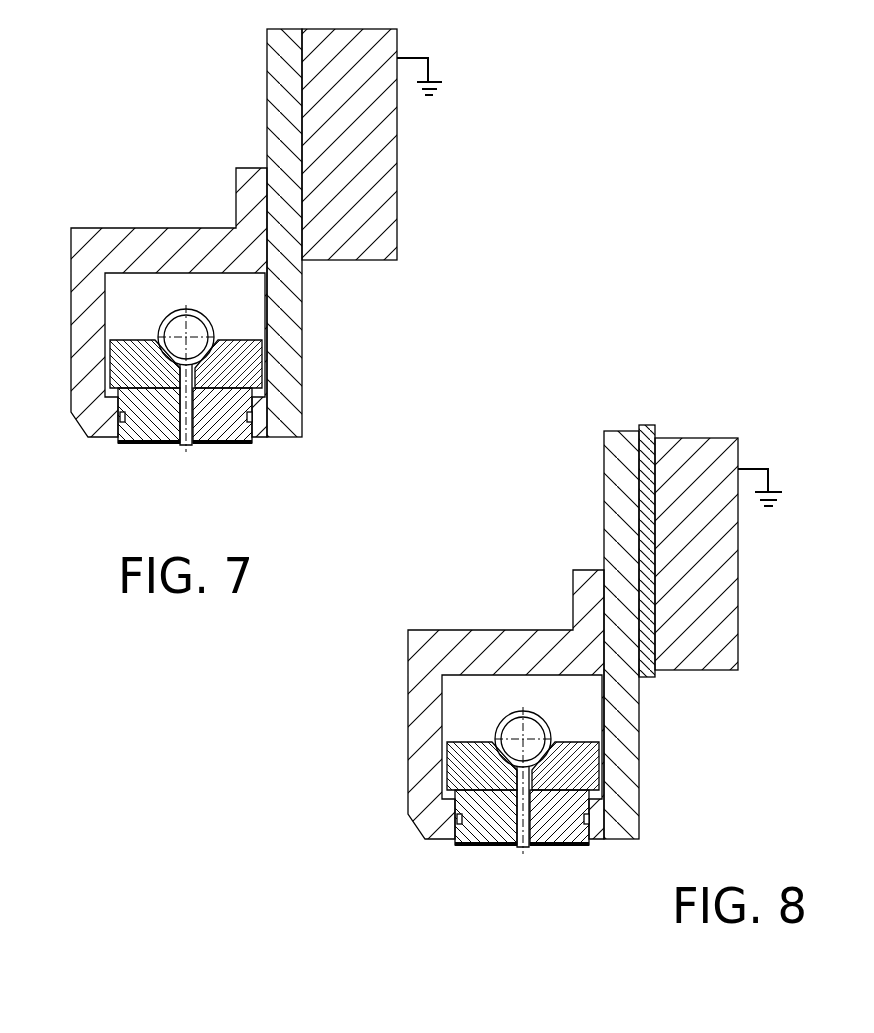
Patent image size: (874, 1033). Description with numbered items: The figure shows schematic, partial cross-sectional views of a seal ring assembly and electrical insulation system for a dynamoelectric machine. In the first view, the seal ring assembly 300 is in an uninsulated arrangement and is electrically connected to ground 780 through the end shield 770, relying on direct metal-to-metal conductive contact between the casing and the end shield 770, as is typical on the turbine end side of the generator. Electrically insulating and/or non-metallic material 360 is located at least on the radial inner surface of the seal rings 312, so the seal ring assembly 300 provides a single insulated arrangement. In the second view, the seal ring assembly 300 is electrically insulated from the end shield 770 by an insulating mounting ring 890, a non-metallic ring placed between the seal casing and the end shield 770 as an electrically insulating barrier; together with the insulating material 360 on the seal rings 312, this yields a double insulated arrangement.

In FIG. 7, the seal ring assembly 300 is at (123, 179).
In FIG. 8, the seal ring assembly 300 is at (523, 635).
In FIG. 7, the seal rings 312 is at (162, 377).
In FIG. 8, the seal rings 312 is at (523, 766).
In FIG. 7, the electrically insulating and/or non-metallic material 360 is at (148, 447).
In FIG. 8, the electrically insulating and/or non-metallic material 360 is at (528, 854).
In FIG. 7, the end shield 770 is at (373, 147).
In FIG. 8, the end shield 770 is at (722, 560).
In FIG. 7, the ground 780 is at (438, 90).
In FIG. 8, the insulating mounting ring 890 is at (647, 678).